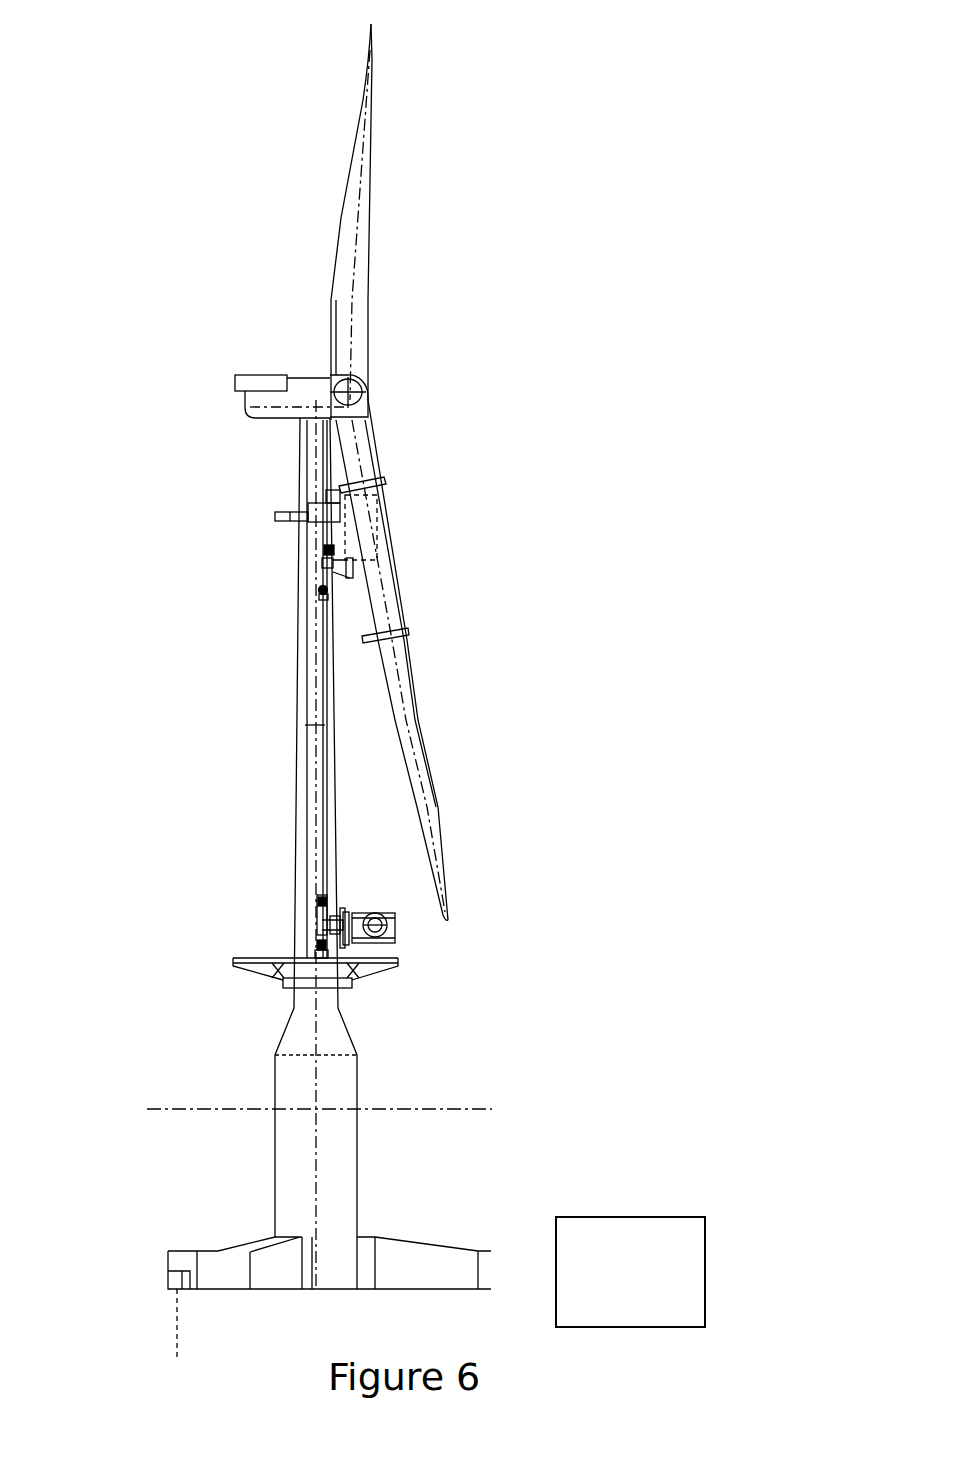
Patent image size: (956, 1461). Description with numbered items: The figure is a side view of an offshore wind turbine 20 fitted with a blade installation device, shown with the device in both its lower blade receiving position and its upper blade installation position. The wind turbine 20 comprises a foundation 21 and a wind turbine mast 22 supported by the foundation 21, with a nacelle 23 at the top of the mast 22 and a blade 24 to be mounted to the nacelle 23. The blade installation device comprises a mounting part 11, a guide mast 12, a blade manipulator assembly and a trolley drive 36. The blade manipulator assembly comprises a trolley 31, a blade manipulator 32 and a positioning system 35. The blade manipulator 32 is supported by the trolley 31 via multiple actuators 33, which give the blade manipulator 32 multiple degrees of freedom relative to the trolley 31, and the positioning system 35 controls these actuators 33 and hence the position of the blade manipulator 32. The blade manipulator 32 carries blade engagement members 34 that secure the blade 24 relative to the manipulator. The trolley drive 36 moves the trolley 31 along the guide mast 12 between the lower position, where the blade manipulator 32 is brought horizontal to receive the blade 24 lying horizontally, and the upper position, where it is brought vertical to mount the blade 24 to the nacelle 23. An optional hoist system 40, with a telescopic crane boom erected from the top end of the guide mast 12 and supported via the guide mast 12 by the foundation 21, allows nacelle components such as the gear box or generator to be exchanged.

The offshore wind turbine 20 is at (534, 180).
The nacelle 23 is at (263, 362).
The blade 24 is at (425, 710).
The wind turbine mast 22 is at (288, 762).
The guide mast 12 is at (313, 741).
The foundation 21 is at (375, 1052).
The mounting part 11 is at (275, 985).
The hoist system 40 is at (318, 487).
The blade manipulator 32 is at (392, 482).
The blade engagement members 34 is at (408, 622).
The positioning system 35 is at (322, 550).
The trolley 31 is at (322, 572).
The trolley drive 36 is at (322, 592).
The actuators 33 is at (336, 612).